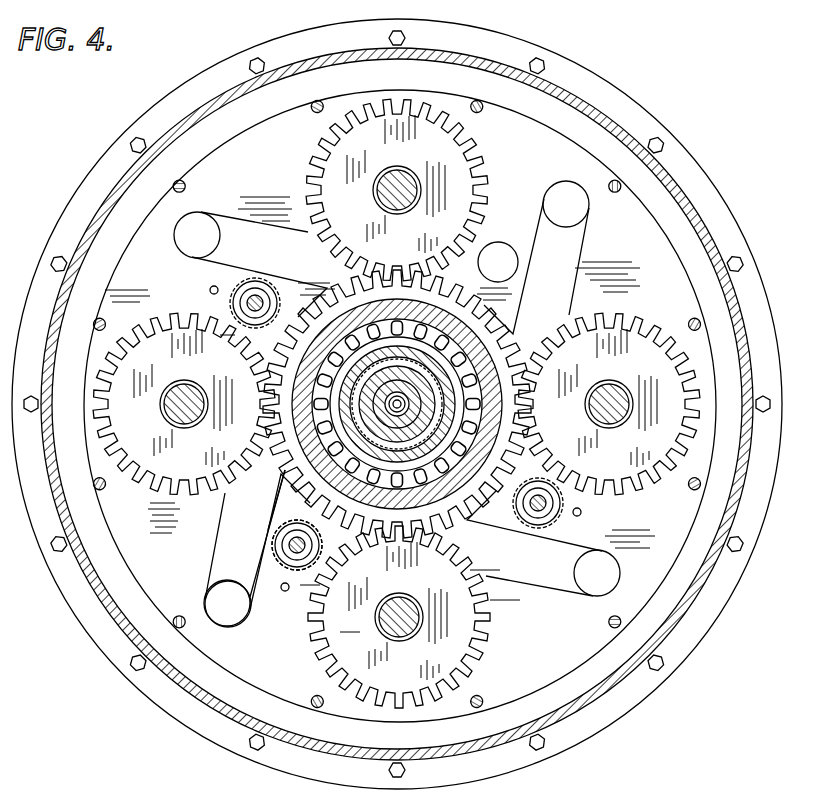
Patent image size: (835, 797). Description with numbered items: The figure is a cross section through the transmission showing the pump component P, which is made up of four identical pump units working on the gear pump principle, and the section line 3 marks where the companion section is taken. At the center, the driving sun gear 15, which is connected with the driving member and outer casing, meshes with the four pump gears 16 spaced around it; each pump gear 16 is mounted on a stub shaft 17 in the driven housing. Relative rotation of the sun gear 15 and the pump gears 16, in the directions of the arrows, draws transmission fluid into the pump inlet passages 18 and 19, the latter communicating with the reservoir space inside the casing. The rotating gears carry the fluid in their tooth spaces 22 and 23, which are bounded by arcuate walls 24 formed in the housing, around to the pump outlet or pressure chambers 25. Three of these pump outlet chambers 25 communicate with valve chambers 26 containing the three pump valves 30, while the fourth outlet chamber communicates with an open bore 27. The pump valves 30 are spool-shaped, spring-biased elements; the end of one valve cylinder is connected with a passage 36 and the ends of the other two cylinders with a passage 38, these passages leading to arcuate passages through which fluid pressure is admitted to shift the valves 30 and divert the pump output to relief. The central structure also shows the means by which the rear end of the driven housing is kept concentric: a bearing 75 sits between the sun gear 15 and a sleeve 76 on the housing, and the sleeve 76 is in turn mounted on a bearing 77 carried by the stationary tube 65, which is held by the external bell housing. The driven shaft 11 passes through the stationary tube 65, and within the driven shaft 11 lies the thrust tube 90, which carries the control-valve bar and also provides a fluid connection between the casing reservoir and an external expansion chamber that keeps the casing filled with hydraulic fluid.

The section line 3- 3 is at (375, 12).
The pump component P is at (318, 164).
The driven shaft 11 is at (313, 506).
The driving sun gear 15 is at (280, 470).
The pump gear 16 is at (185, 332).
The stub shaft 17 is at (178, 384).
The pump inlet passage 18 is at (217, 562).
The pump inlet passage 19 is at (213, 598).
The tooth space 22 is at (146, 487).
The tooth space 23 is at (284, 493).
The arcuate wall 24 is at (100, 443).
The pump outlet chamber 25 is at (264, 343).
The valve chamber 26 is at (275, 541).
The open bore 27 is at (504, 246).
The pump valve 30 is at (295, 549).
The passage 36 is at (287, 591).
The passage 38 is at (211, 288).
The stationary tube 65 is at (397, 408).
The bearing 75 is at (466, 369).
The sleeve 76 is at (452, 418).
The bearing 77 is at (455, 401).
The thrust tube 90 is at (426, 326).